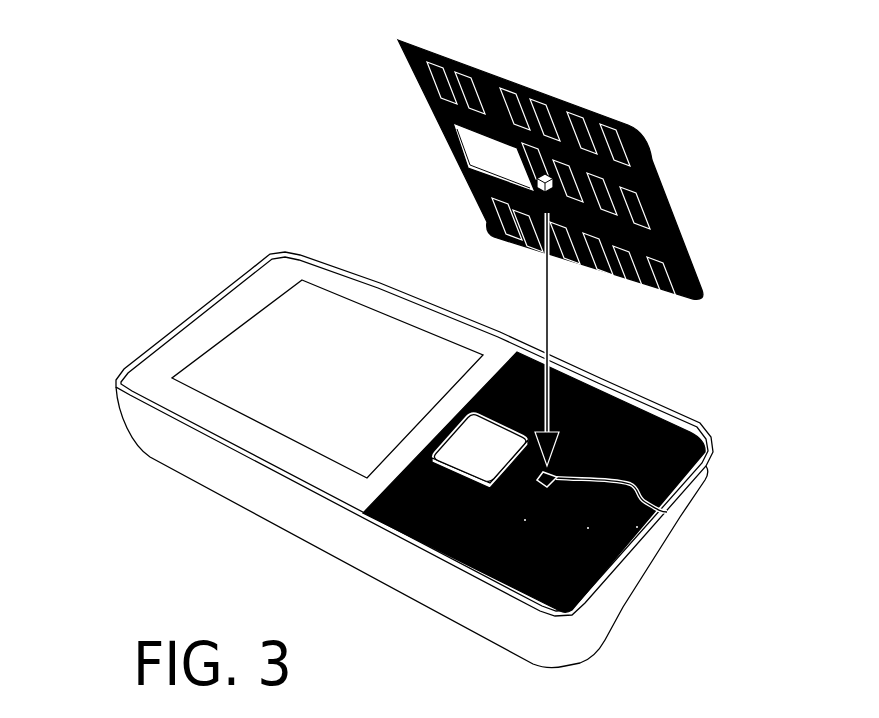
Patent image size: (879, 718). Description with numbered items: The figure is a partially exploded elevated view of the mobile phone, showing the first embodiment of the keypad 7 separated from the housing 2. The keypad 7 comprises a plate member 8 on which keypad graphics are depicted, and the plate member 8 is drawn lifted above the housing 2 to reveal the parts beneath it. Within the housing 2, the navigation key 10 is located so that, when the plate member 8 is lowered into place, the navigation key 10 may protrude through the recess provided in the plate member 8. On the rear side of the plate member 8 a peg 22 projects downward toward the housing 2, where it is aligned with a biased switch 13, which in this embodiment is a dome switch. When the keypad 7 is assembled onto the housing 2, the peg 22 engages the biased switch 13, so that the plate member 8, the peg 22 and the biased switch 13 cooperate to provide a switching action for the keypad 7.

The housing 2 is at (207, 457).
The keypad 7 is at (310, 92).
The plate member 8 is at (578, 100).
The navigation key 10 is at (478, 458).
The biased switch 13 is at (667, 512).
The peg 22 is at (537, 186).